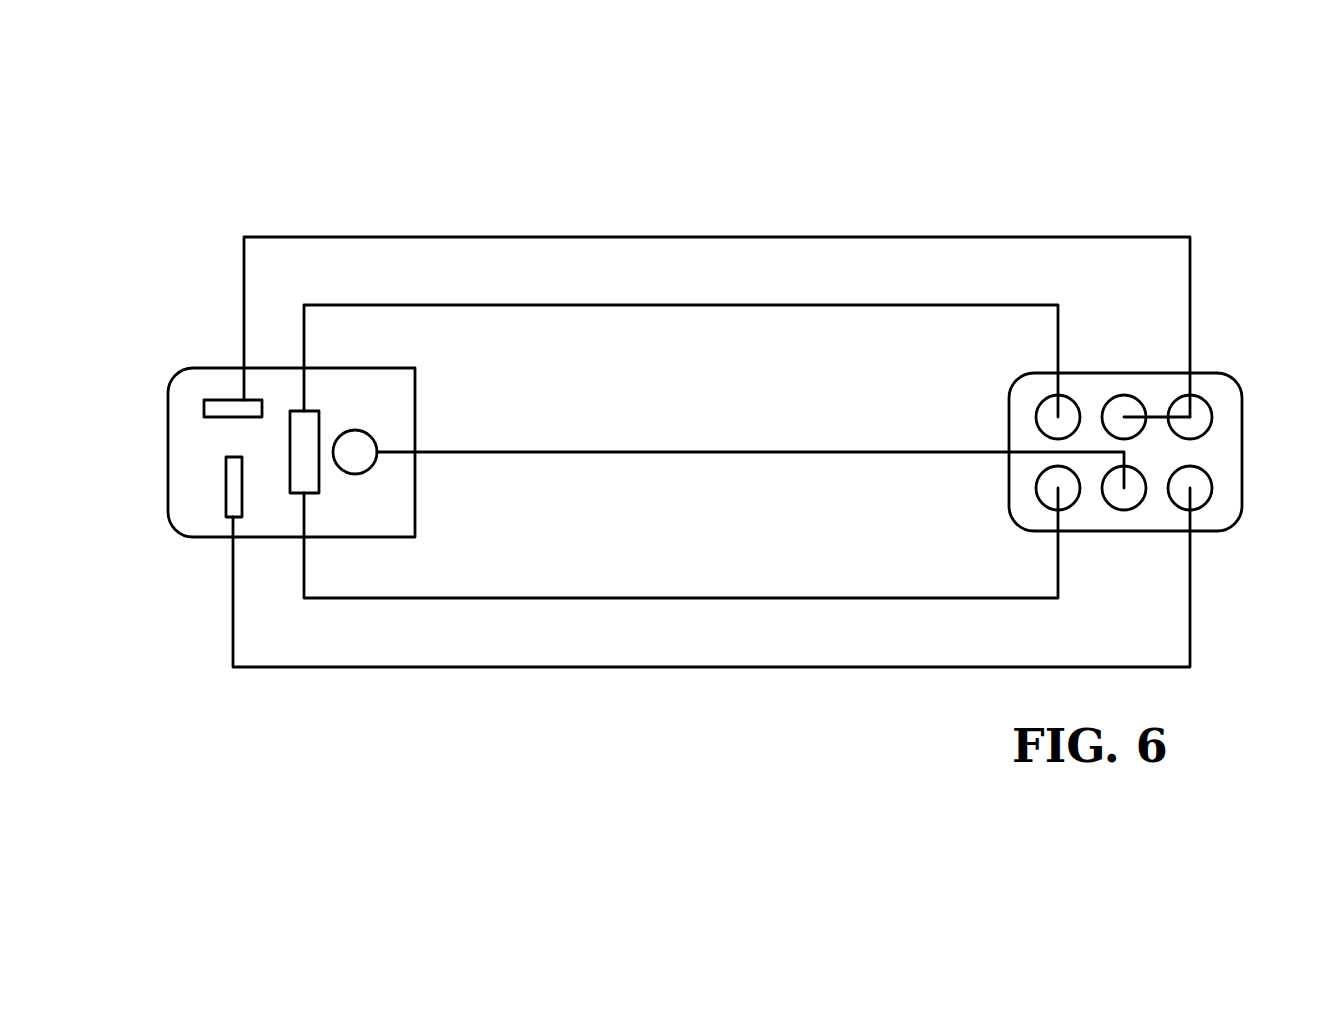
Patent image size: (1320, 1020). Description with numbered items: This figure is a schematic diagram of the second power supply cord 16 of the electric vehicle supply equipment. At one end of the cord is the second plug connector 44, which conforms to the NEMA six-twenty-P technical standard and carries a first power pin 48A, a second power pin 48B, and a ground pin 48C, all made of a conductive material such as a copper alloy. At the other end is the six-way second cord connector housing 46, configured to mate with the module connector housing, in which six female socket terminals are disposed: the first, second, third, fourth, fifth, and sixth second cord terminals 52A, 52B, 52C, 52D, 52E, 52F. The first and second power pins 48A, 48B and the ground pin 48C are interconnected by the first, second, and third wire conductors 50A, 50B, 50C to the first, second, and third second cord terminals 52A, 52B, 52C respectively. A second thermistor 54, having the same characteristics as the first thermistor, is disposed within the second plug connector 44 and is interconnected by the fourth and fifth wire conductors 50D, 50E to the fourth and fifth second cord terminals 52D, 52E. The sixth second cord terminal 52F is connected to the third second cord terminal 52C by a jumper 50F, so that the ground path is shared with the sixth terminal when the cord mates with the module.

The second power supply cord 16 is at (1068, 215).
The second plug connector 44 is at (228, 367).
The second cord connector housing 46 is at (1243, 408).
The first power pin 48A is at (218, 400).
The second power pin 48B is at (225, 497).
The ground pin 48C is at (370, 440).
The first wire conductor 50A is at (557, 237).
The second wire conductor 50B is at (583, 667).
The third wire conductor 50C is at (657, 453).
The fourth wire conductor 50D is at (670, 305).
The fifth wire conductor 50E is at (507, 598).
The jumper 50F is at (1163, 417).
The first second cord terminal 52A is at (1198, 408).
The second second cord terminal 52B is at (1198, 497).
The third second cord terminal 52C is at (1127, 497).
The fourth second cord terminal 52D is at (1047, 408).
The fifth second cord terminal 52E is at (1067, 500).
The sixth second cord terminal 52F is at (1122, 405).
The second thermistor 54 is at (312, 411).